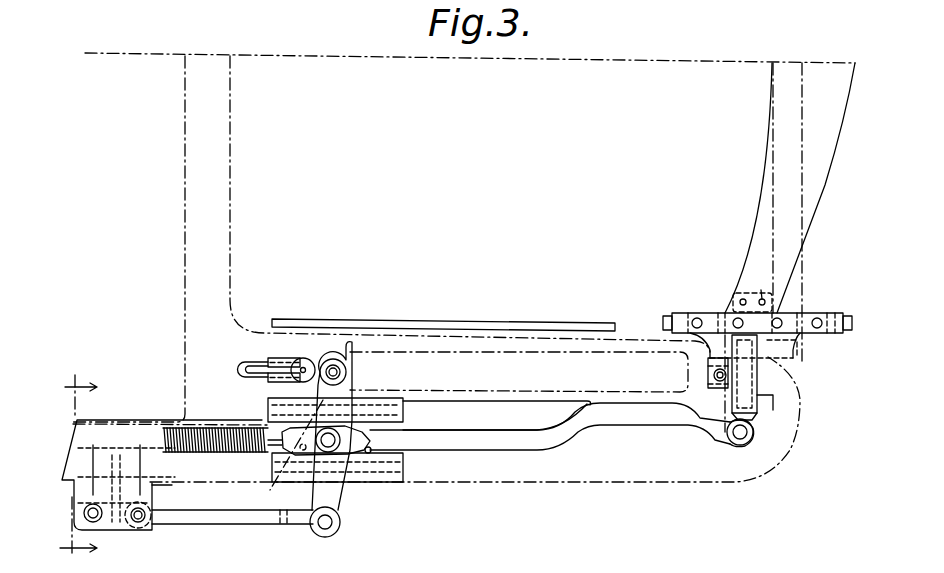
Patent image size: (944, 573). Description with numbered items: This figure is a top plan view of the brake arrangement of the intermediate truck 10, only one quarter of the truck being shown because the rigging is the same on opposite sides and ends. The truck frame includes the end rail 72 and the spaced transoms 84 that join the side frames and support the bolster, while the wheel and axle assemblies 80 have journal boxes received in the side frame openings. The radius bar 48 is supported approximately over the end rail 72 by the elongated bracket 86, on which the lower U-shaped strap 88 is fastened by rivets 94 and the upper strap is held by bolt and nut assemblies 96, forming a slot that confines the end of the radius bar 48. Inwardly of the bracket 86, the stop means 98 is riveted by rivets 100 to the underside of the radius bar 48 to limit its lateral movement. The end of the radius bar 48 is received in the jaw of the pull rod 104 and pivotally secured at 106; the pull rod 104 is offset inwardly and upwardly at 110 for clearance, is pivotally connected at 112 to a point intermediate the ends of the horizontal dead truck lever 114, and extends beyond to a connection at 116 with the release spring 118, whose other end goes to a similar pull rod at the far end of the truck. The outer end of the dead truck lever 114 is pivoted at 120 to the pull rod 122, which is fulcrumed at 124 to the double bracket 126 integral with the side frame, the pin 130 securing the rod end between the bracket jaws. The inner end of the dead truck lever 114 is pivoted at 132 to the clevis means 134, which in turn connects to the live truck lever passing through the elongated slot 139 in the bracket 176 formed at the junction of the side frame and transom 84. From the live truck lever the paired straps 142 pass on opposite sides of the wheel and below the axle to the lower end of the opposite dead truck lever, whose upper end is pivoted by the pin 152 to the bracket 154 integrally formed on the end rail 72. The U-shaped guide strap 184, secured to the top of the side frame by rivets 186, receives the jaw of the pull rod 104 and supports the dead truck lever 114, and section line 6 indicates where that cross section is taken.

The section line 6 is at (78, 465).
The truck 10 is at (781, 466).
The radius bar 48 is at (820, 104).
The end rail 72 is at (802, 270).
The wheel and axle assembly 80 is at (623, 343).
The transom 84 is at (235, 140).
The bracket 86 is at (803, 345).
The lower U-shaped strap 88 is at (706, 375).
The rivets 94 is at (718, 310).
The bolt and nut assemblies 96 is at (668, 315).
The stop means 98 is at (733, 295).
The rivets 100 is at (745, 299).
The pull rod 104 is at (705, 426).
The pivotal connection 106 is at (740, 446).
The offset 110 is at (617, 422).
The pivotal connection 112 is at (348, 420).
The horizontal dead truck lever 114 is at (340, 500).
The connection 116 is at (275, 425).
The release spring 118 is at (207, 430).
The pivotal connection 120 is at (325, 537).
The pull rod 122 is at (247, 524).
The fulcrum 124 is at (143, 522).
The double bracket 126 is at (115, 532).
The pin 130 is at (150, 522).
The pivotal connection 132 is at (333, 365).
The clevis means 134 is at (296, 358).
The elongated slot 139 is at (240, 364).
The paired straps 142 is at (457, 319).
The pin 152 is at (763, 360).
The bracket 154 is at (710, 390).
The bracket 176 is at (345, 345).
The guide strap 184 is at (400, 426).
The rivets 186 is at (303, 450).